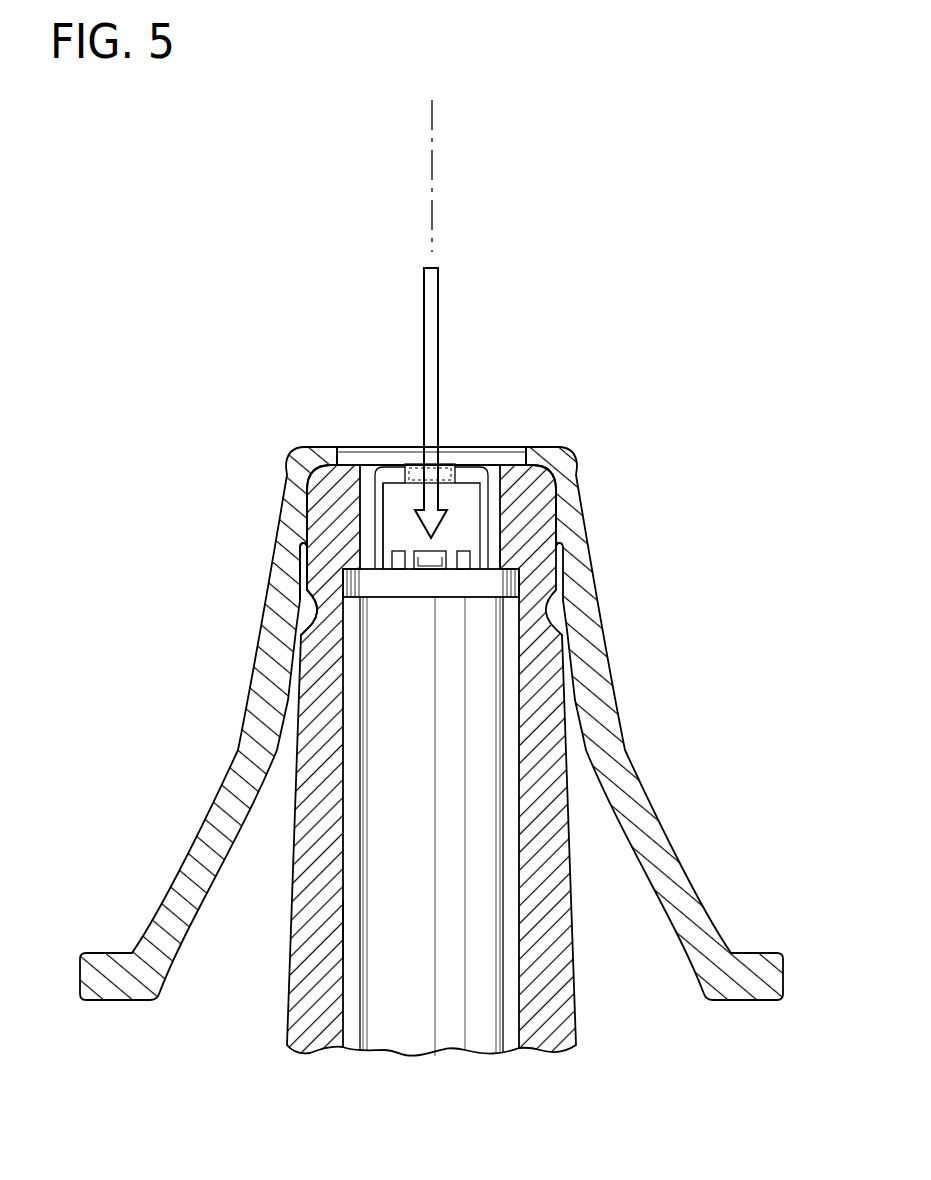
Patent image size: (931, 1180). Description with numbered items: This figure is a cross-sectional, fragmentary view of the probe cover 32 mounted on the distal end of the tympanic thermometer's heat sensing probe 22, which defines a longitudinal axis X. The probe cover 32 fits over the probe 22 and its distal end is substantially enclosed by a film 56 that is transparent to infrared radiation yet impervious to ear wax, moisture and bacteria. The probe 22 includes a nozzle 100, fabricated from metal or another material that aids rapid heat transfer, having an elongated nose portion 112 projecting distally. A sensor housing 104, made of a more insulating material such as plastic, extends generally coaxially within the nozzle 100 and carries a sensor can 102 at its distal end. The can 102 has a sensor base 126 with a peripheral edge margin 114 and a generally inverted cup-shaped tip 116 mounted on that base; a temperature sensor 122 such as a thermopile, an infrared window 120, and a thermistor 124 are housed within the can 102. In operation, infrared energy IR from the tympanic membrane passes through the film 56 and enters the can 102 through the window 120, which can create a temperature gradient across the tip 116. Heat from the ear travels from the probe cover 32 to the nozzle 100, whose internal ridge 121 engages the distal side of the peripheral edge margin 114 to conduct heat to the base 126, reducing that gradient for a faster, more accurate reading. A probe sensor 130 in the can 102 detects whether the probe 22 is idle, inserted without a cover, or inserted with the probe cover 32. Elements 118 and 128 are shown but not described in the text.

The heat sensing probe 22 is at (565, 676).
The probe cover 32 is at (247, 737).
The film 56 is at (448, 464).
The nozzle 100 is at (300, 987).
The sensor can 102 is at (375, 512).
The sensor housing 104 is at (455, 790).
The elongated nose portion 112 is at (315, 580).
The peripheral edge margin 114 is at (513, 568).
The tip 116 is at (391, 548).
The inner wall 118 is at (354, 918).
The window 120 is at (472, 464).
The internal ridge 121 is at (508, 592).
The temperature sensor 122 is at (497, 485).
The thermistor 124 is at (398, 551).
The sensor base 126 is at (393, 598).
The top plate 128 is at (520, 466).
The probe sensor 130 is at (440, 551).
The infrared energy IR is at (438, 308).
The longitudinal axis x is at (432, 172).